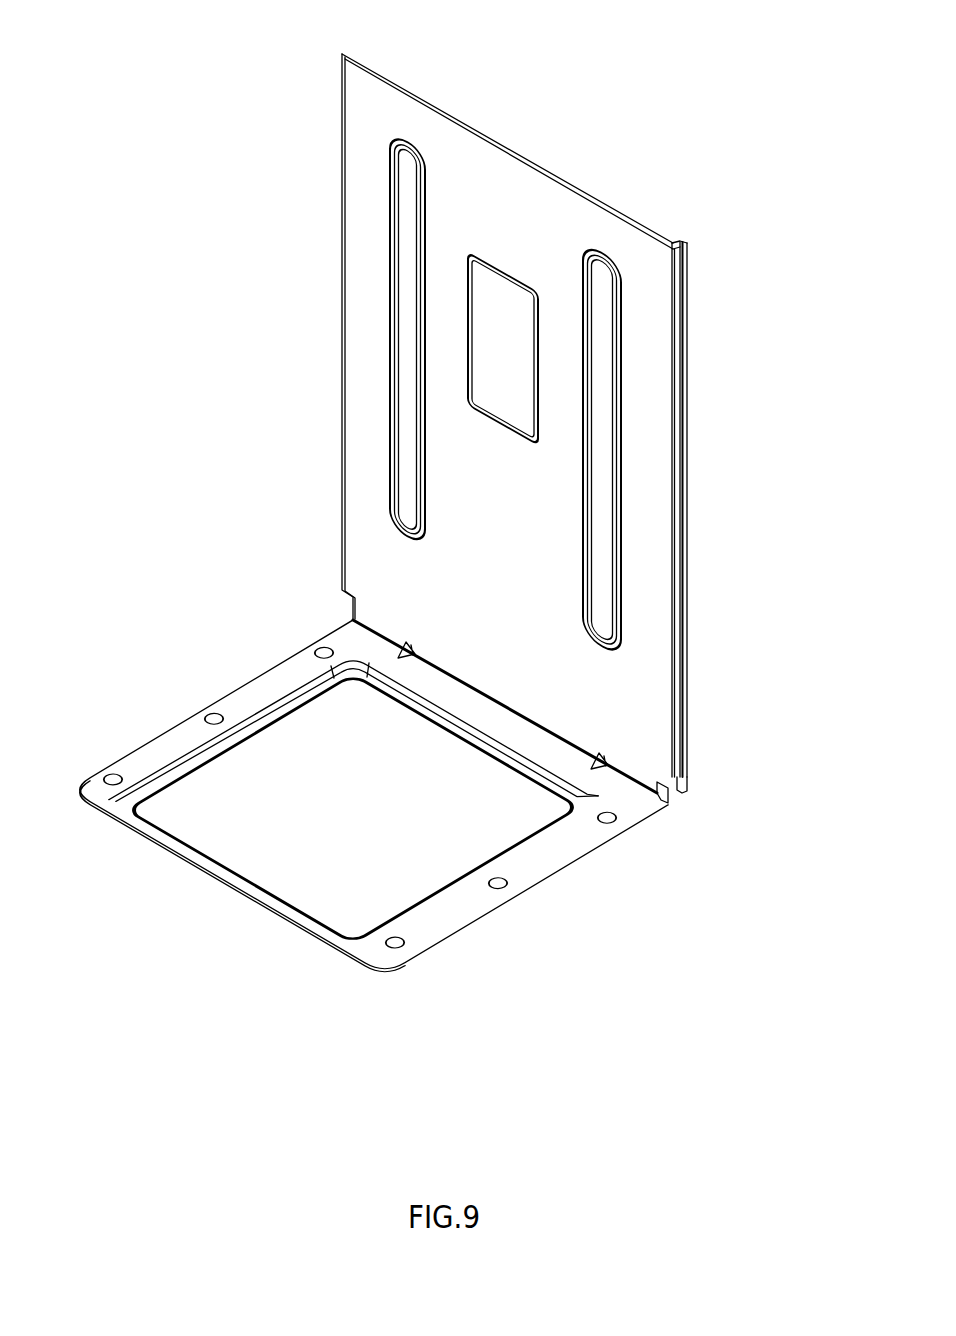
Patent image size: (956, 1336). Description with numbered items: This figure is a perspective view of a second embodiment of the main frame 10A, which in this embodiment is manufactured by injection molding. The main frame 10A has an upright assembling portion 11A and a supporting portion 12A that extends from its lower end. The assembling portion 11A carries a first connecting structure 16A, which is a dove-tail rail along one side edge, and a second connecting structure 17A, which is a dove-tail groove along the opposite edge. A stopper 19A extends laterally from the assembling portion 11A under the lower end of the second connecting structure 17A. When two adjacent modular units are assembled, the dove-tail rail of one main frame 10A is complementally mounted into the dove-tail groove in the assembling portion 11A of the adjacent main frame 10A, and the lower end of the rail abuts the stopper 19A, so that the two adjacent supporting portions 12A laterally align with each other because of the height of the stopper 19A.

The main frame 10A is at (459, 563).
The assembling portion 11A is at (486, 417).
The supporting portion 12A is at (425, 852).
The first connecting structure 16A is at (343, 203).
The second connecting structure 17A is at (682, 327).
The stopper 19A is at (682, 792).